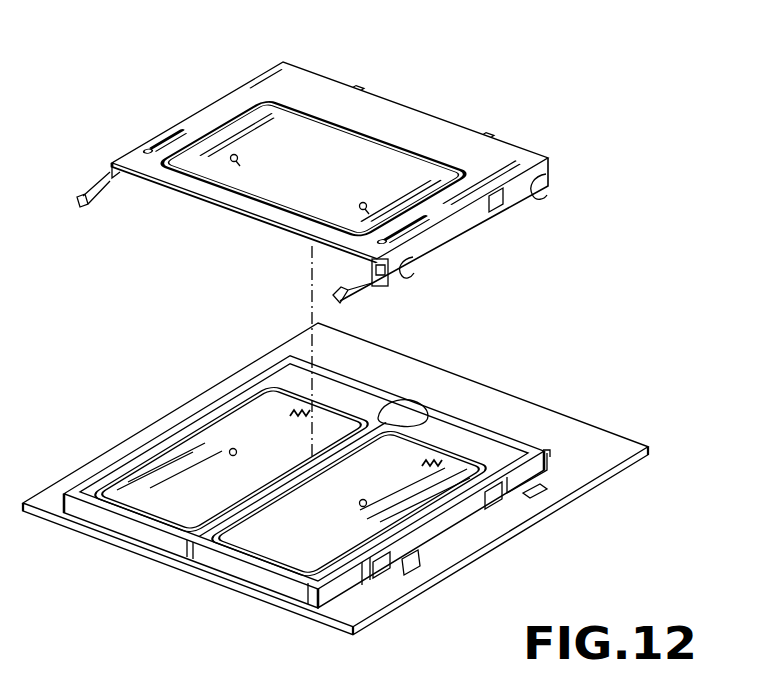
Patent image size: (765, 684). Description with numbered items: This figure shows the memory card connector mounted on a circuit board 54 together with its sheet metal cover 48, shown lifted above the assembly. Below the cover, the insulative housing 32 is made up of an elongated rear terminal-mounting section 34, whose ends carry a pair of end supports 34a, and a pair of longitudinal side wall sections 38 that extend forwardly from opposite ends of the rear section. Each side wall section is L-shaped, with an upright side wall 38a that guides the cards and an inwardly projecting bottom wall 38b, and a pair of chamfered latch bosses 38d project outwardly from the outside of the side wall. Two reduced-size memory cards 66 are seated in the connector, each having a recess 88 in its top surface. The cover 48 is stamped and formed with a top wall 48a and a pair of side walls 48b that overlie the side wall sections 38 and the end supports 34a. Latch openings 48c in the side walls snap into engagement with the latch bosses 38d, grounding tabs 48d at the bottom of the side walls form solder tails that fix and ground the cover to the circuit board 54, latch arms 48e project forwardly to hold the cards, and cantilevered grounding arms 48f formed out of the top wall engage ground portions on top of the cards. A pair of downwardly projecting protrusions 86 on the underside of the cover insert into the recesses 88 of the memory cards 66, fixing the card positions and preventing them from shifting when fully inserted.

The insulative housing 32 is at (488, 426).
The rear terminal-mounting section 34 is at (384, 396).
The end supports 34a is at (543, 470).
The side wall sections 38 is at (427, 555).
The upright side wall 38a is at (505, 508).
The bottom wall 38b is at (472, 507).
The chamfered latch bosses 38d is at (522, 497).
The cover 48 is at (431, 110).
The top wall 48a is at (369, 97).
The side walls 48b is at (550, 172).
The latch openings 48c is at (496, 206).
The grounding tabs 48d is at (414, 273).
The latch arms 48e is at (347, 294).
The cantilevered grounding arms 48f is at (408, 238).
The circuit board 54 is at (450, 534).
The reduced-size memory cards 66 is at (241, 588).
The downwardly projecting protrusions 86 is at (236, 165).
The recesses 88 is at (360, 502).